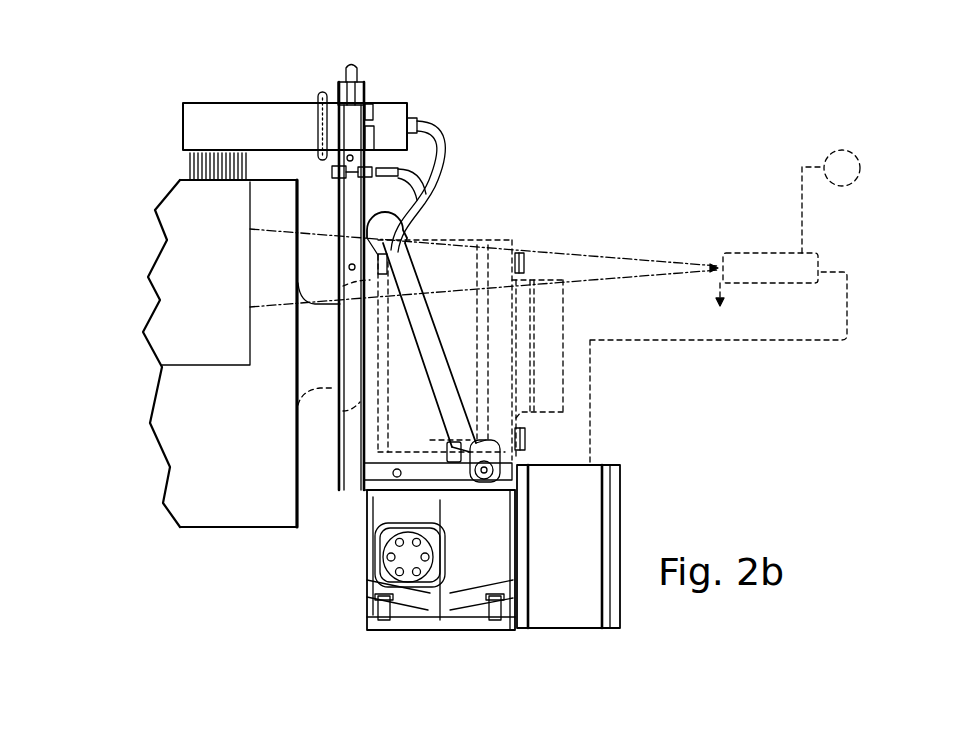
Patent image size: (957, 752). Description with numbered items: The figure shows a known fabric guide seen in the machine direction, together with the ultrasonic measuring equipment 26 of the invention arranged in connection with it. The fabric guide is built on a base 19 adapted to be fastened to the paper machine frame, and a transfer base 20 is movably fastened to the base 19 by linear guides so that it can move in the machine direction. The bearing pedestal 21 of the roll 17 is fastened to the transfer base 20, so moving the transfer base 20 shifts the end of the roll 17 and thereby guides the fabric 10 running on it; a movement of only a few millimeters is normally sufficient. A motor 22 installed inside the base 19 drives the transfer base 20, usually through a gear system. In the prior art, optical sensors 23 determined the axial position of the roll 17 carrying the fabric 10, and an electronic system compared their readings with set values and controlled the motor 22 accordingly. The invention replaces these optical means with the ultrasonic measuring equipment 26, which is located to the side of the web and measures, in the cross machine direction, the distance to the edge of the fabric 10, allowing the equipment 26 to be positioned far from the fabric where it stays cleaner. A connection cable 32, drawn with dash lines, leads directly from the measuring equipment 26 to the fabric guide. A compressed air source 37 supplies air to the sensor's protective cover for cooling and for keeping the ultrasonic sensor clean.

The fabric 10 is at (198, 217).
The roll 17 is at (235, 469).
The base 19 is at (372, 586).
The transfer base 20 is at (407, 480).
The bearing pedestal 21 is at (458, 345).
The motor 22 is at (472, 0).
The optical sensors 23 is at (243, 125).
The ultrasonic measuring equipment 26 is at (745, 220).
The connection cable 32 is at (765, 337).
The compressed air source 37 is at (838, 170).